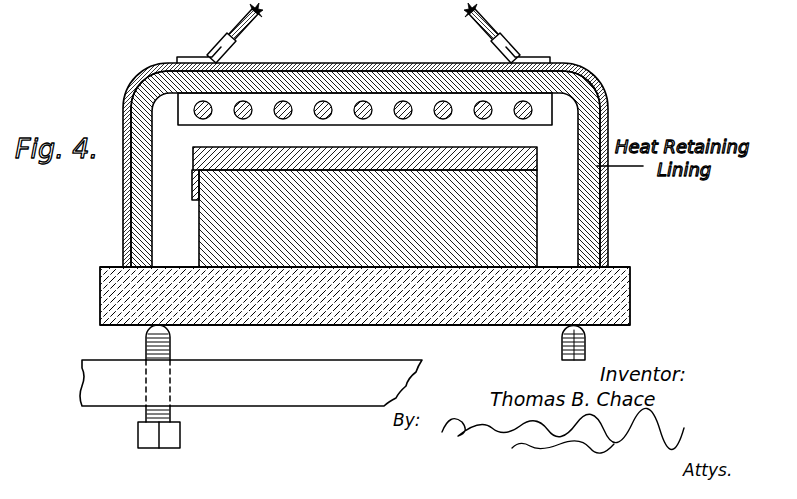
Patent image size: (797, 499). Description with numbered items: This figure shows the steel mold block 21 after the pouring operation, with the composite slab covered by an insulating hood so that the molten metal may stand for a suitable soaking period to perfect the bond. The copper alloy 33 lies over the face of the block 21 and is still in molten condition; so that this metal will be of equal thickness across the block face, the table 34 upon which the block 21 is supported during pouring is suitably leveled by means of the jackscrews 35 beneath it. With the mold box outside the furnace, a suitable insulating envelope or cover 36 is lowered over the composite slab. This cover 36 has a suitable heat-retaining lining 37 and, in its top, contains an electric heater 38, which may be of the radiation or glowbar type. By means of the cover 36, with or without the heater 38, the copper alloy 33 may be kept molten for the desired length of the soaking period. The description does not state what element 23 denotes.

The block 21 is at (203, 231).
The lip 23 is at (192, 186).
The copper alloy 33 is at (193, 153).
The table 34 is at (632, 296).
The jackscrews 35 is at (146, 339).
The insulating envelope or cover 36 is at (602, 96).
The heat-retaining lining 37 is at (585, 118).
The electric heater 38 is at (388, 100).